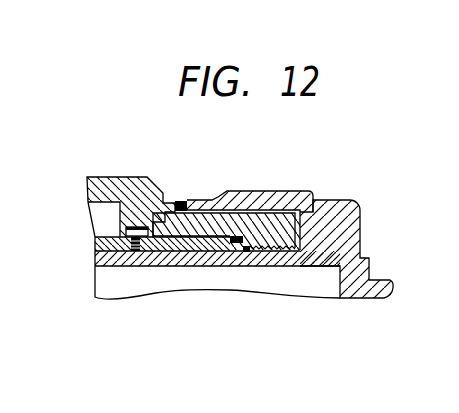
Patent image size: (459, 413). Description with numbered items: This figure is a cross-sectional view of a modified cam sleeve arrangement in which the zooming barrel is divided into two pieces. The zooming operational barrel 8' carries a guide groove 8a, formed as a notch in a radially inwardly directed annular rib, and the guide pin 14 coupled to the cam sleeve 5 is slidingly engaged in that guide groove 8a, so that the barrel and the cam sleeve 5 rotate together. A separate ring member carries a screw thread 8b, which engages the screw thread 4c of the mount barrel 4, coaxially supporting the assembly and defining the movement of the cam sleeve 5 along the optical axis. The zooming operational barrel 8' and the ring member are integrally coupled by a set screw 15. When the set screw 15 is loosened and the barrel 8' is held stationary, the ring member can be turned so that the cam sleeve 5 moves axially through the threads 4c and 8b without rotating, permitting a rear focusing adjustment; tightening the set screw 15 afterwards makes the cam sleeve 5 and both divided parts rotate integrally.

The mount barrel 4 is at (338, 206).
The cam sleeve 5 is at (180, 248).
The zooming operational barrel 8' is at (158, 194).
The guide groove 8a is at (135, 226).
The screw thread 8b is at (275, 251).
The screw thread 4c is at (284, 291).
The guide pin 14 is at (129, 231).
The set screw 15 is at (183, 202).